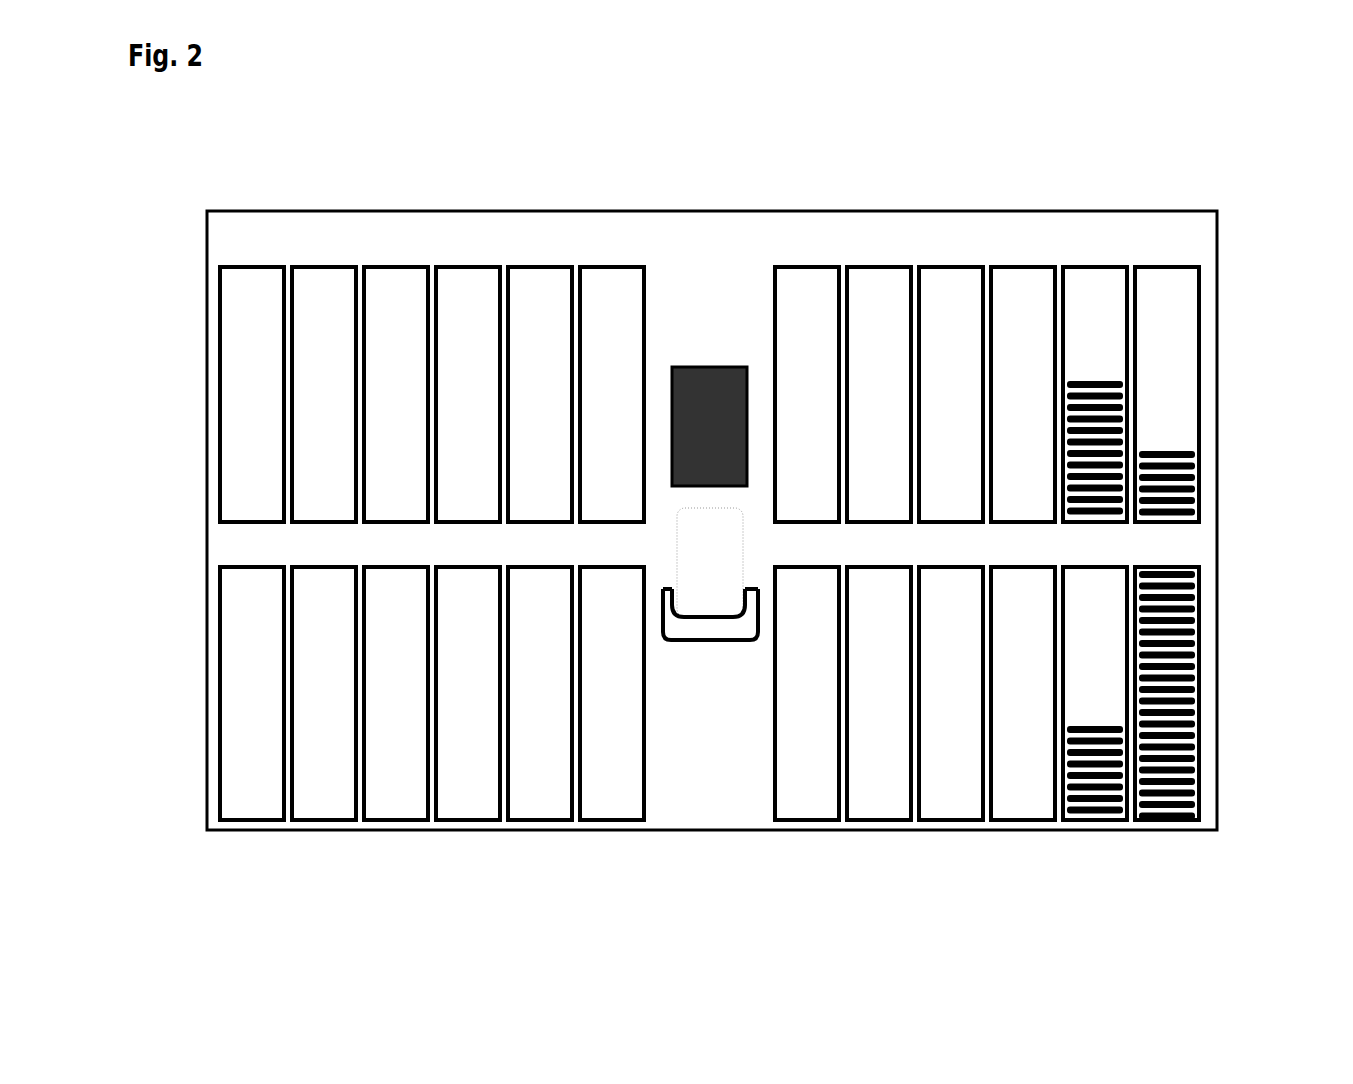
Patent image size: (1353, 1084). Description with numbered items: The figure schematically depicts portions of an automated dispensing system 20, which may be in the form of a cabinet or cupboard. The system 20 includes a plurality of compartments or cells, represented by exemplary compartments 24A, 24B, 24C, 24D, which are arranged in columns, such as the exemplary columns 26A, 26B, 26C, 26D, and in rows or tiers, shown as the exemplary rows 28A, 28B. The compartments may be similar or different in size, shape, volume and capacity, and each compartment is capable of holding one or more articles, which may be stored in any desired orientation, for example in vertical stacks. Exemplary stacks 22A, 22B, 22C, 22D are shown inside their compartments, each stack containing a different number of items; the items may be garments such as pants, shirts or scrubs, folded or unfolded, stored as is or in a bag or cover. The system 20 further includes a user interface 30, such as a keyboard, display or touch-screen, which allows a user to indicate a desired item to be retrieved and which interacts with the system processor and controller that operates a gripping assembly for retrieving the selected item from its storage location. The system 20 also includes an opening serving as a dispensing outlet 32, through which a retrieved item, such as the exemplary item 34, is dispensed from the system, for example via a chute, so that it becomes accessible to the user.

The automated dispensing system 20 is at (659, 150).
The stack 22A is at (1200, 475).
The stack 22B is at (1202, 602).
The stack 22C is at (1093, 822).
The stack 22D is at (1099, 523).
The compartment 24A is at (1227, 389).
The compartment 24B is at (1220, 693).
The compartment 24C is at (1179, 398).
The compartment 24D is at (1047, 725).
The column 26A is at (1227, 452).
The column 26B is at (1132, 502).
The column 26C is at (1026, 171).
The column 26D is at (950, 171).
The row 28A is at (171, 370).
The row 28B is at (172, 714).
The user interface 30 is at (728, 350).
The dispensing outlet 32 is at (688, 642).
The item 34 is at (715, 604).